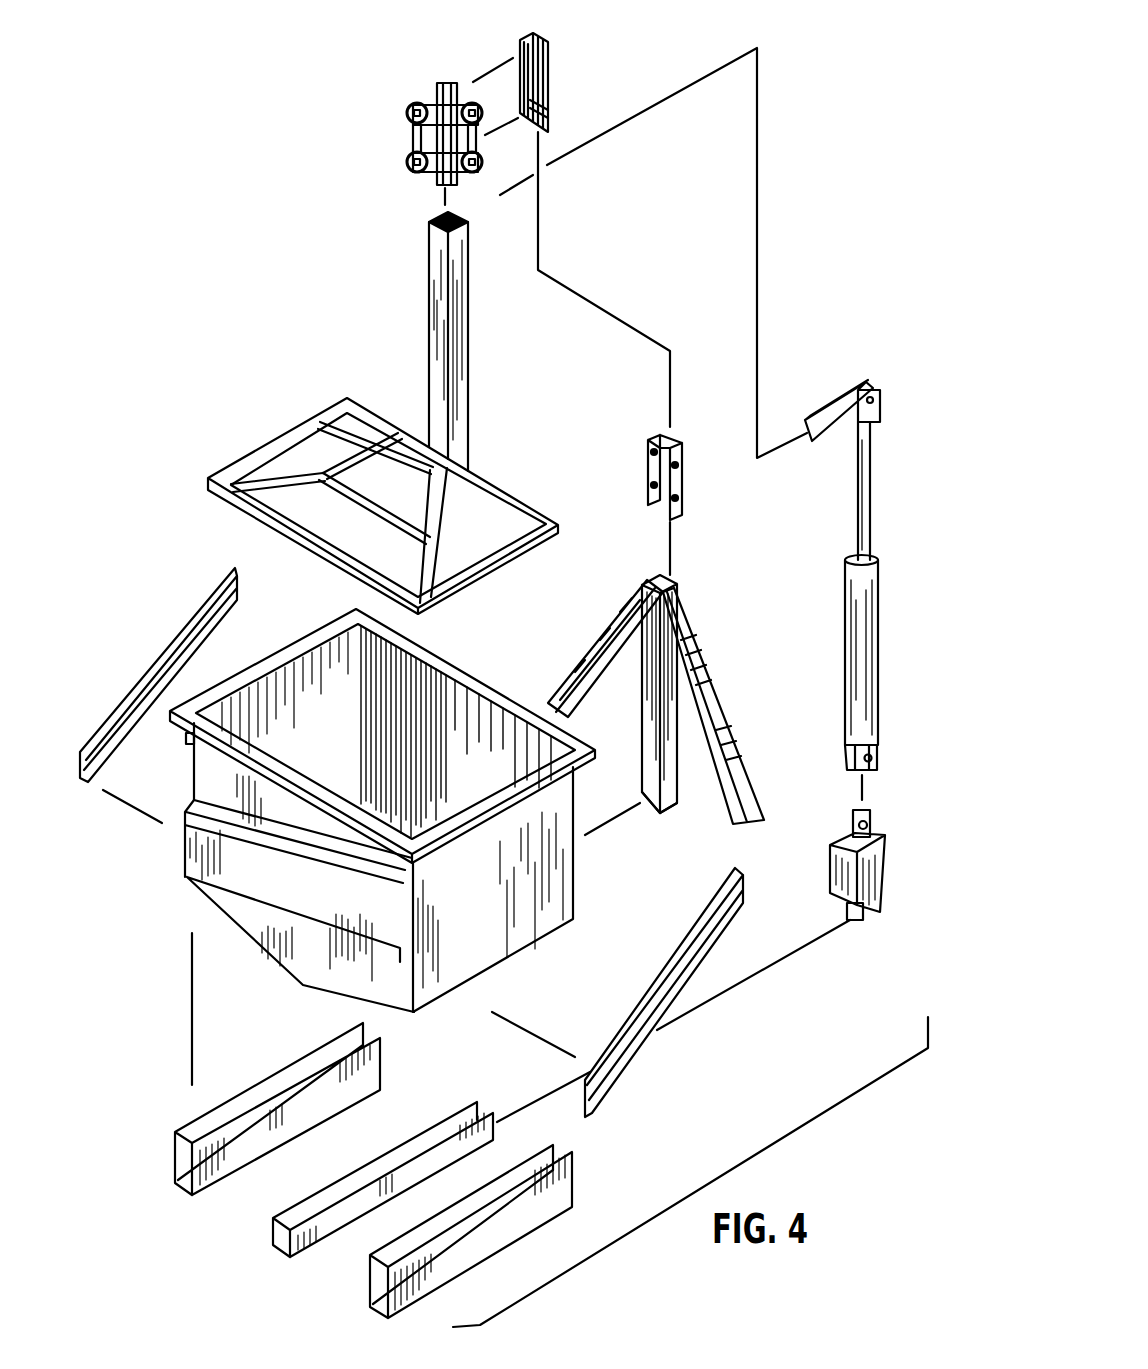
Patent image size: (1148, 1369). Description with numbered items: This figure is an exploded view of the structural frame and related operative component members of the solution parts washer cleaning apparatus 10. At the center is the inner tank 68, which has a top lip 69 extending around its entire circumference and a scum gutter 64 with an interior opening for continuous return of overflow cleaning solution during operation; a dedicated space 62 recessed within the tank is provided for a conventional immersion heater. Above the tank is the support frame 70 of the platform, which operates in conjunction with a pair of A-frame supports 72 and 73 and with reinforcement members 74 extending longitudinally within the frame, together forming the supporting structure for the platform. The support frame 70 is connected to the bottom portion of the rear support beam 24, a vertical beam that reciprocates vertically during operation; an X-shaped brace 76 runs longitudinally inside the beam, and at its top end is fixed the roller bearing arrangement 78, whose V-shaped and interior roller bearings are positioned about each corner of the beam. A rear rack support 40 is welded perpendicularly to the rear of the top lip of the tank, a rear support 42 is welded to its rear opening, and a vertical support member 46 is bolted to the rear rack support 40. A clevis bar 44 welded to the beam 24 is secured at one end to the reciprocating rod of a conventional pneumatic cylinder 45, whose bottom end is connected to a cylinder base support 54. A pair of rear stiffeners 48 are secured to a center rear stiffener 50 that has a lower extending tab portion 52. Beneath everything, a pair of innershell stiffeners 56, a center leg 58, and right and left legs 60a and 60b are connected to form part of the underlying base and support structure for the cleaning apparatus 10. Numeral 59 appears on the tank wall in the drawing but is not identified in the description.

The solution parts washer cleaning apparatus 10 is at (246, 280).
The rear support beam 24 is at (430, 342).
The rear rack support 40 is at (548, 43).
The rear support 42 is at (557, 118).
The clevis bar 44 is at (835, 410).
The pneumatic cylinder 45 is at (878, 660).
The vertical support member 46 is at (678, 487).
The rear stiffeners 48 is at (603, 638).
The center rear stiffener 50 is at (667, 592).
The lower extending tab portion 52 is at (670, 817).
The cylinder base support 54 is at (867, 863).
The innershell stiffeners 56 is at (175, 640).
The center leg 58 is at (353, 1207).
The hopper rear wall 59 is at (433, 726).
The right leg 60a is at (235, 1155).
The left leg 60b is at (443, 1255).
The dedicated space 62 is at (210, 860).
The scum gutter 64 is at (188, 740).
The inner tank 68 is at (374, 810).
The top lip 69 is at (460, 815).
The support frame 70 is at (383, 494).
The A-frame support 72 is at (297, 485).
The A-frame support 73 is at (390, 520).
The reinforcement members 74 is at (487, 530).
The X-shaped brace 76 is at (440, 213).
The roller bearing arrangement 78 is at (430, 97).